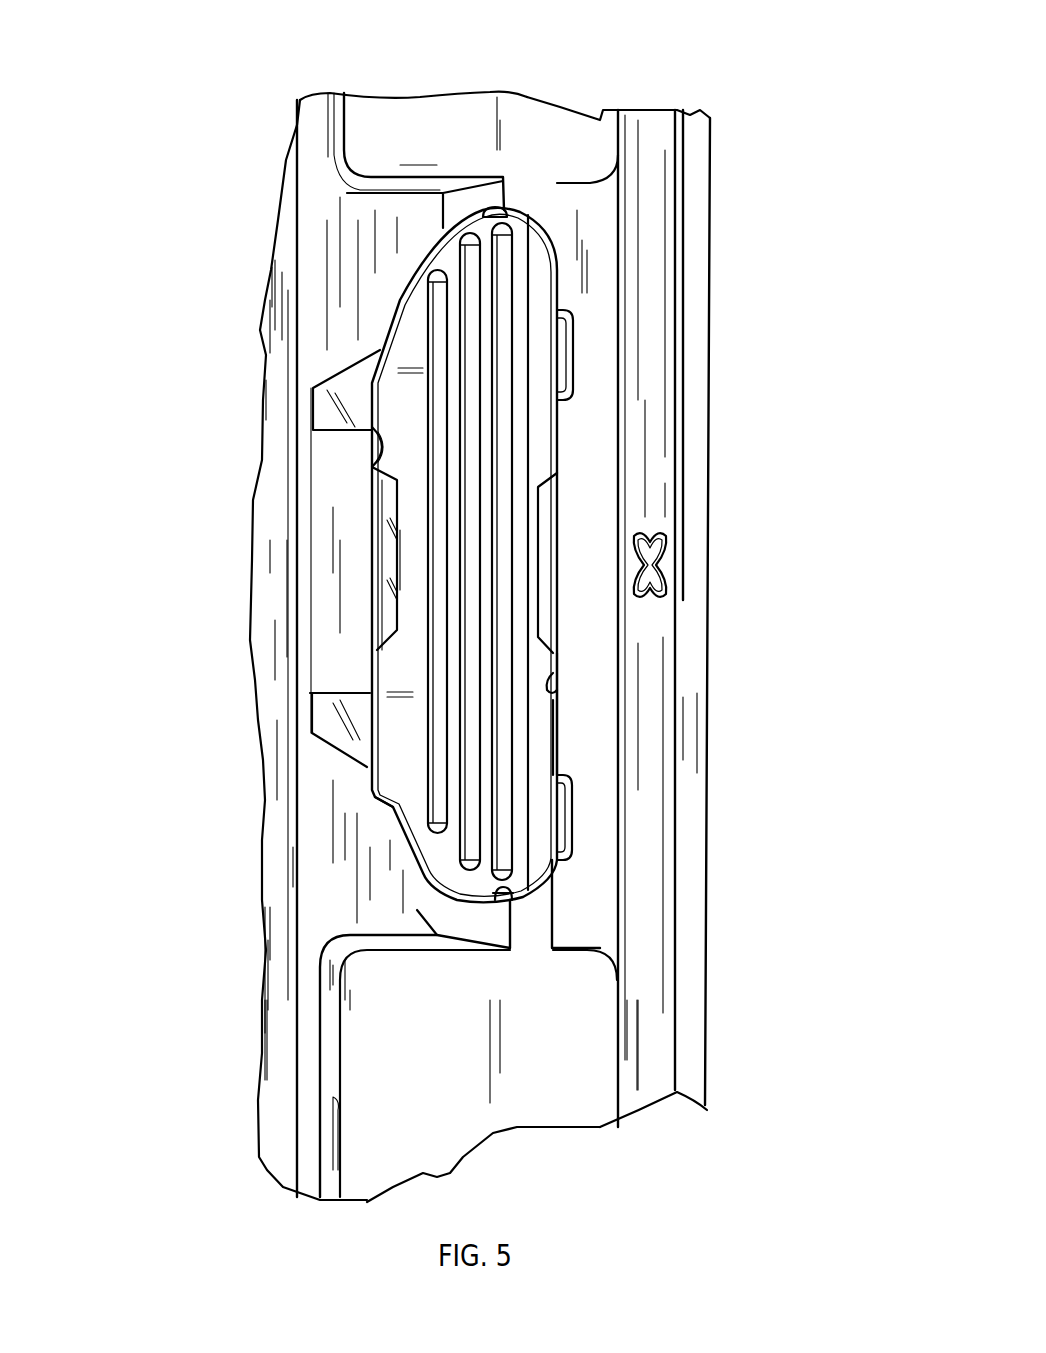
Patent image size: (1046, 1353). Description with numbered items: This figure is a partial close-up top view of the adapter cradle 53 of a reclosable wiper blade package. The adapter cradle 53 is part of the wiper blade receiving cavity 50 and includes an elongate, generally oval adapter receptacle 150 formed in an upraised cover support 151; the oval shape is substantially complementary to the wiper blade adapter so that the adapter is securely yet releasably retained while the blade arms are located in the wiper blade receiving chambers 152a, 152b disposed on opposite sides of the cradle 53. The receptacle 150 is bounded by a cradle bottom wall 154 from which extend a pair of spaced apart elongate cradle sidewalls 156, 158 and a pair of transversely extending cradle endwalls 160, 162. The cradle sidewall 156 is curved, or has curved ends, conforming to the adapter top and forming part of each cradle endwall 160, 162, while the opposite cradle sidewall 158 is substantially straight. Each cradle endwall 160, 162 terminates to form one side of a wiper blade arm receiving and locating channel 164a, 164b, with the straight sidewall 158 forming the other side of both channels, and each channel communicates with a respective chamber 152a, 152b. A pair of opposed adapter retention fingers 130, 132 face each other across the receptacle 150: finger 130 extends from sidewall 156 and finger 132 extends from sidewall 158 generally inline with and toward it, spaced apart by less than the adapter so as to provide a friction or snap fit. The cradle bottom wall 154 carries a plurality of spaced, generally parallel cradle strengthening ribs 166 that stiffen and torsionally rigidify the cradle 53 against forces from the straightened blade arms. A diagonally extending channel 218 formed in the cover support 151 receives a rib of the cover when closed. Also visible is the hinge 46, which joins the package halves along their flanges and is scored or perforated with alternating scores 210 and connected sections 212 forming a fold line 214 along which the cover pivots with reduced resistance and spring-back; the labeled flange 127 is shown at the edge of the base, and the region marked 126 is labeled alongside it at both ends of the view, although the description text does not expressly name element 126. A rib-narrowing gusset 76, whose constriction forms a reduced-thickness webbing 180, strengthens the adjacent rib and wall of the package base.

The hinge 46 is at (255, 1165).
The wiper blade receiving cavity 50 is at (585, 1165).
The adapter cradle 53 is at (575, 713).
The rib-narrowing gusset 76 is at (700, 565).
The channel 126 is at (423, 127).
The flange 127 is at (287, 172).
The adapter retention finger 130 is at (393, 615).
The adapter retention finger 132 is at (558, 510).
The adapter receptacle 150 is at (575, 280).
The cover support 151 is at (302, 283).
The wiper blade receiving chamber 152a is at (580, 65).
The wiper blade receiving chamber 152b is at (598, 1018).
The cradle bottom wall 154 is at (540, 435).
The cradle sidewall 156 is at (372, 466).
The cradle sidewall 158 is at (553, 693).
The cradle endwall 160 is at (505, 895).
The cradle endwall 162 is at (527, 210).
The wiper blade arm receiving and locating channel 164a is at (548, 160).
The wiper blade arm receiving and locating channel 164b is at (539, 950).
The cradle strengthening rib 166 is at (443, 787).
The webbing 180 is at (655, 562).
The score 210 is at (270, 653).
The connected section 212 is at (273, 372).
The fold line 214 is at (260, 1053).
The diagonally extending channel 218 is at (393, 813).